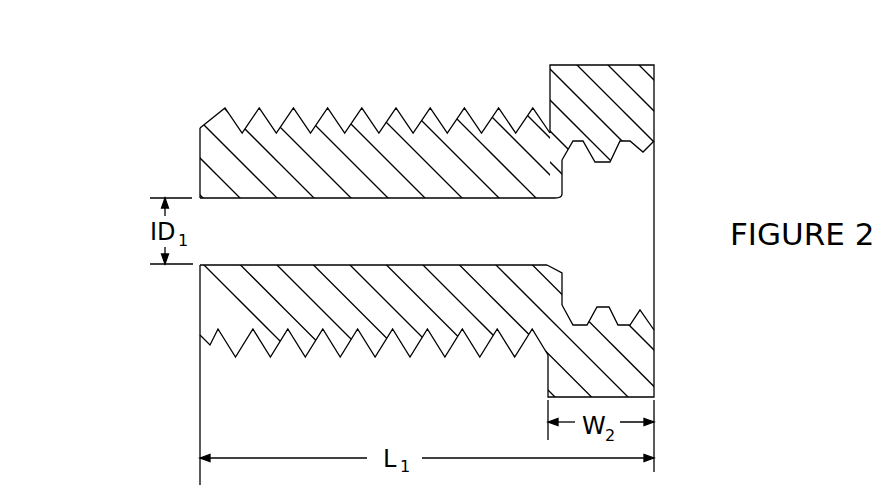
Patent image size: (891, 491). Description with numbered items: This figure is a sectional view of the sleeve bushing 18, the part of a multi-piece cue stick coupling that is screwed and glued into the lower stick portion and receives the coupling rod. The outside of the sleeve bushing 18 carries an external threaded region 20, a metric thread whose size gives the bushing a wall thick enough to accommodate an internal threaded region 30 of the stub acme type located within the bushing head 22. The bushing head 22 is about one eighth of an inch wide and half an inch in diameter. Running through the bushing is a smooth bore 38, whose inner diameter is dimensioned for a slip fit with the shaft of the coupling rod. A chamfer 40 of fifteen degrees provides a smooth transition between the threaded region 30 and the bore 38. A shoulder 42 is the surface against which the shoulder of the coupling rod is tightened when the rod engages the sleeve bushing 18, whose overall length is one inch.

The sleeve bushing 18 is at (218, 148).
The threaded region 20 is at (372, 112).
The bushing head 22 is at (630, 60).
The threaded region 30 is at (624, 161).
The smooth bore 38 is at (383, 265).
The chamfer 40 is at (561, 204).
The shoulder 42 is at (563, 289).